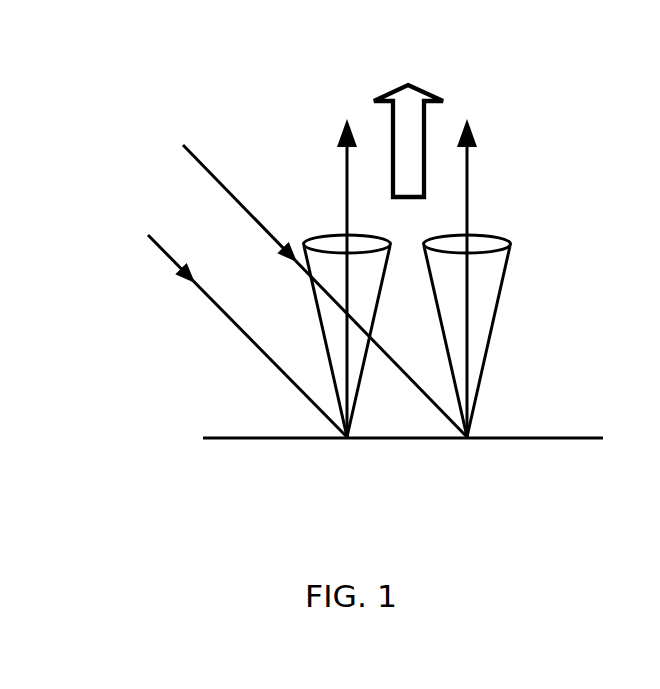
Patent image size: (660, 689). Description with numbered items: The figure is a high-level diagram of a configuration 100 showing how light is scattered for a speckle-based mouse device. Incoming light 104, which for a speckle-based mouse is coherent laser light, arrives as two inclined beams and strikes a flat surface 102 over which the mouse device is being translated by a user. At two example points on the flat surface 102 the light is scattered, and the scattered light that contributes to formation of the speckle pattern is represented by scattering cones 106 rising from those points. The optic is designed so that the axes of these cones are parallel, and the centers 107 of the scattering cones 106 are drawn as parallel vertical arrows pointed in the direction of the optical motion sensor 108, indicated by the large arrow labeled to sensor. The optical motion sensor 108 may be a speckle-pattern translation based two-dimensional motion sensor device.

The configuration 100 is at (490, 612).
The flat surface 102 is at (403, 477).
The incoming light 104 is at (297, 291).
The scattering cones 106 is at (483, 294).
The centers of the scattering cones 107 is at (470, 207).
The optical motion sensor 108 is at (412, 113).